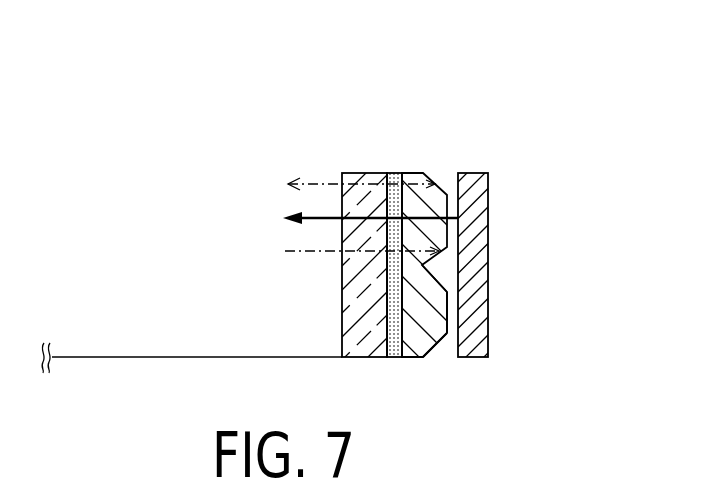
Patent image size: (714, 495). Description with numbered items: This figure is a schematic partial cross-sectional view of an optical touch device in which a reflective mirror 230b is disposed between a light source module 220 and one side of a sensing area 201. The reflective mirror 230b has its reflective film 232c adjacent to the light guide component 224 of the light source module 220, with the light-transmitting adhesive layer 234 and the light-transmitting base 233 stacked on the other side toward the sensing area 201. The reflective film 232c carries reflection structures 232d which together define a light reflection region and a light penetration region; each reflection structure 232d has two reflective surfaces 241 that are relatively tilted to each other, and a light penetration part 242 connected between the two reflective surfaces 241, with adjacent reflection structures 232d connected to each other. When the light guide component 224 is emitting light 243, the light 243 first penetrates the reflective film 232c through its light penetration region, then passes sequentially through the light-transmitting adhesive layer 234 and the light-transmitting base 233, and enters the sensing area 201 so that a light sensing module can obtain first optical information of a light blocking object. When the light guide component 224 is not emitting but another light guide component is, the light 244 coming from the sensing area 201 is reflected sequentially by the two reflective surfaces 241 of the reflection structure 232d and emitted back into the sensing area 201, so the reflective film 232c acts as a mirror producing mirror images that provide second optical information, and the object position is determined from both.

The sensing area 201 is at (125, 268).
The reflective mirror 230b is at (528, 62).
The light-transmitting base 233 is at (357, 175).
The light-transmitting adhesive layer 234 is at (393, 173).
The reflective film 232c is at (442, 178).
The reflection structure 232d is at (435, 341).
The light guide component 224 is at (562, 266).
The light source module 220 is at (482, 258).
The reflective surface 241 is at (432, 283).
The light penetration part 242 is at (448, 310).
The light 243 is at (310, 216).
The light 244 is at (285, 251).